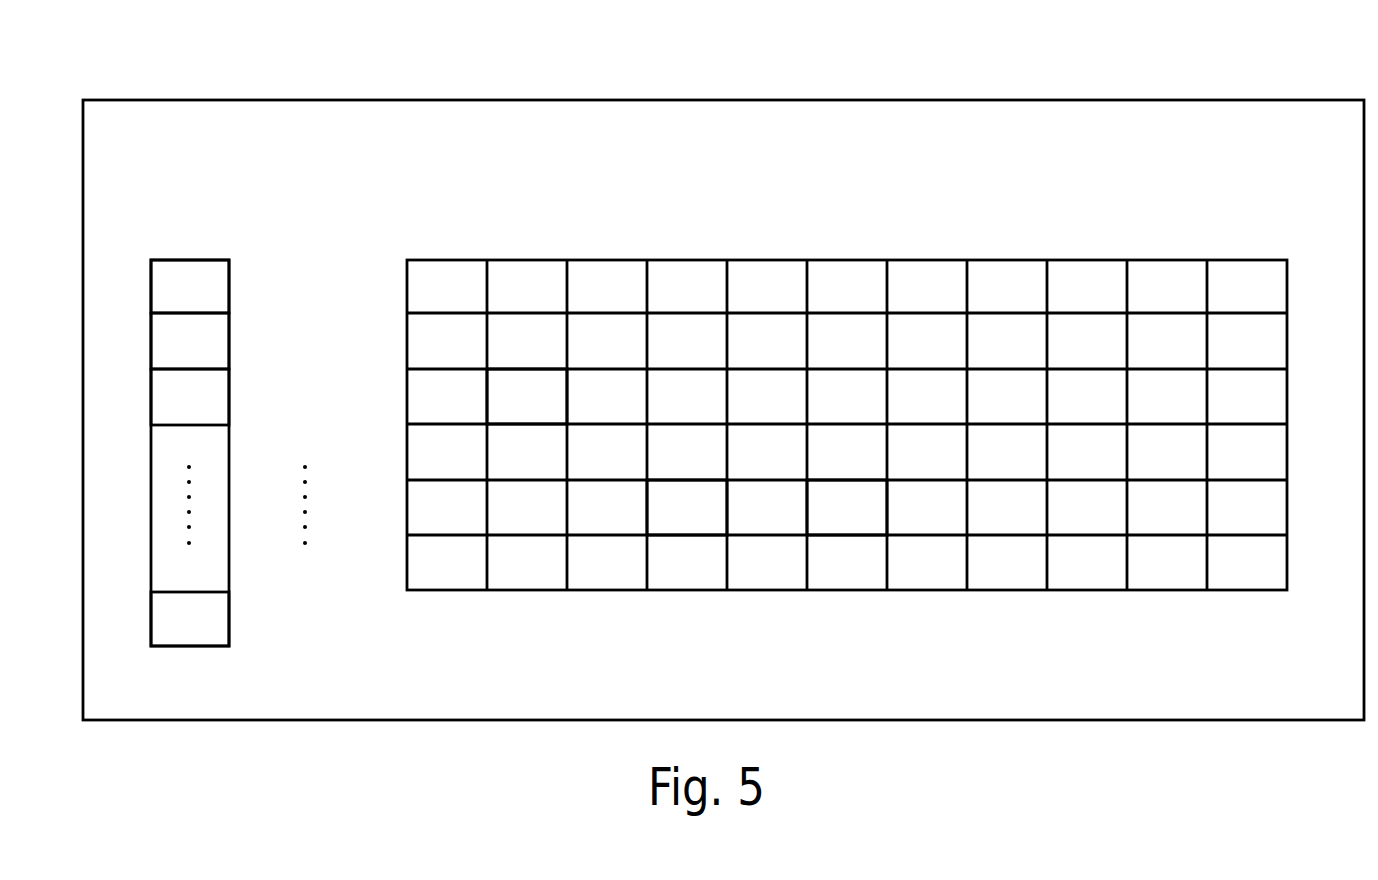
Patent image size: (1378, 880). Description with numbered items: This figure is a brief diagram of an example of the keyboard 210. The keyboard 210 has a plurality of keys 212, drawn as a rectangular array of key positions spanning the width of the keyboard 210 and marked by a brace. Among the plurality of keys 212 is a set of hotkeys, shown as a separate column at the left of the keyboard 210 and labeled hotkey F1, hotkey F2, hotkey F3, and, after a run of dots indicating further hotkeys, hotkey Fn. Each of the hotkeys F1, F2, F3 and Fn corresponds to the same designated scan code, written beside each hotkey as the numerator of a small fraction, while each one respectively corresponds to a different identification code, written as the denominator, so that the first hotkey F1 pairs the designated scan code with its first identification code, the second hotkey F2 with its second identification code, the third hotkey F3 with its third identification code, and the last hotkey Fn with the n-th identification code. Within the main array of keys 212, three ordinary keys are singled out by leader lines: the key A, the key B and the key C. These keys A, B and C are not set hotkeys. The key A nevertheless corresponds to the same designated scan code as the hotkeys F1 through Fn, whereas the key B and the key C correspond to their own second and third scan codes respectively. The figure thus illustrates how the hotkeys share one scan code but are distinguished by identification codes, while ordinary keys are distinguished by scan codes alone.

The keyboard 210 is at (1192, 99).
The keys 212 is at (1277, 230).
The key A is at (552, 415).
The key B is at (868, 522).
The key C is at (708, 522).
The hotkey F1 is at (226, 270).
The hotkey F2 is at (226, 342).
The hotkey F3 is at (226, 404).
The hotkey Fn is at (226, 618).